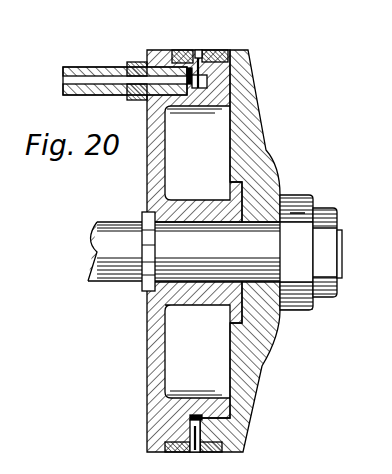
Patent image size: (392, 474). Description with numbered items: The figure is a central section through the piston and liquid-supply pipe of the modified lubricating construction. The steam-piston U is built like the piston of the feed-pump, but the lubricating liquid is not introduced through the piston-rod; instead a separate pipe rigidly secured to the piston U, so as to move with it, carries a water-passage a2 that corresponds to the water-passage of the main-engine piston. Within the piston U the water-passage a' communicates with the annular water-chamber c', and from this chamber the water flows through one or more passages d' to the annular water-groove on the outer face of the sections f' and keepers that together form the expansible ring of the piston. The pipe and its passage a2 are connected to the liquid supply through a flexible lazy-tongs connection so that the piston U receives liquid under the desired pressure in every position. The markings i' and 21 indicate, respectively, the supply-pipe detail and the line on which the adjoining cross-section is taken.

The steam-piston U is at (268, 148).
The water-passage a2 is at (63, 82).
The tube bushing i' is at (116, 92).
The water-passage a' is at (212, 253).
The annular water-chamber c' is at (159, 260).
The pin 21 is at (199, 53).
The piston-sections f' is at (169, 262).
The passages d' is at (228, 262).